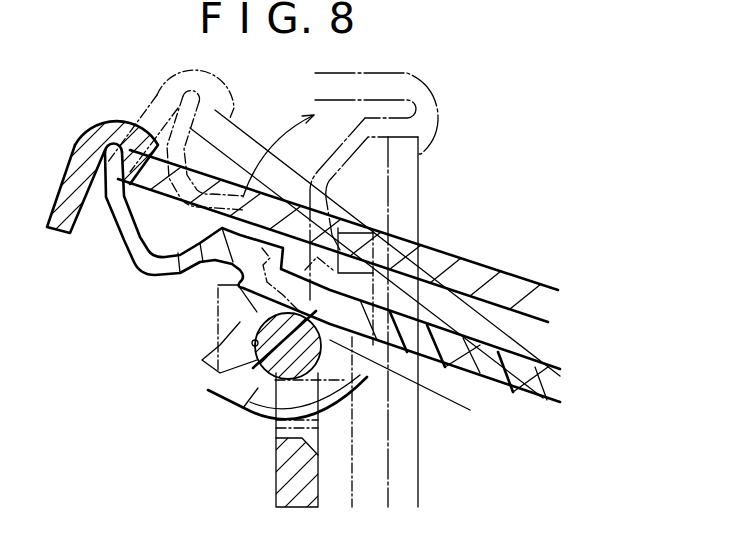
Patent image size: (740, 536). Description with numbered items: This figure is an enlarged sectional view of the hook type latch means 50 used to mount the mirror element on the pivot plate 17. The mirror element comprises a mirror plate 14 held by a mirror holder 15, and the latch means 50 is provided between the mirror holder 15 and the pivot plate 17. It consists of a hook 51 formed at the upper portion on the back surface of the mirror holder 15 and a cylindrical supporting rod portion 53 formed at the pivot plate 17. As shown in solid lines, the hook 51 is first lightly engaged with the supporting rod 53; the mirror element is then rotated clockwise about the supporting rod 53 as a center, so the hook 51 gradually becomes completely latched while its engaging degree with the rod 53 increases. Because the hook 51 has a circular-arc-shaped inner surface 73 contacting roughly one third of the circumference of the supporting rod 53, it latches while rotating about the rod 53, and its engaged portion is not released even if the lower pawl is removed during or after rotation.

The mirror plate 14 is at (483, 264).
The mirror holder 15 is at (107, 124).
The pivot plate 17 is at (278, 472).
The hook type latch means 50 is at (240, 331).
The hook 51 is at (247, 388).
The cylindrical supporting rod portion 53 is at (243, 322).
The circular-arc-shaped inner surface 73 is at (252, 343).